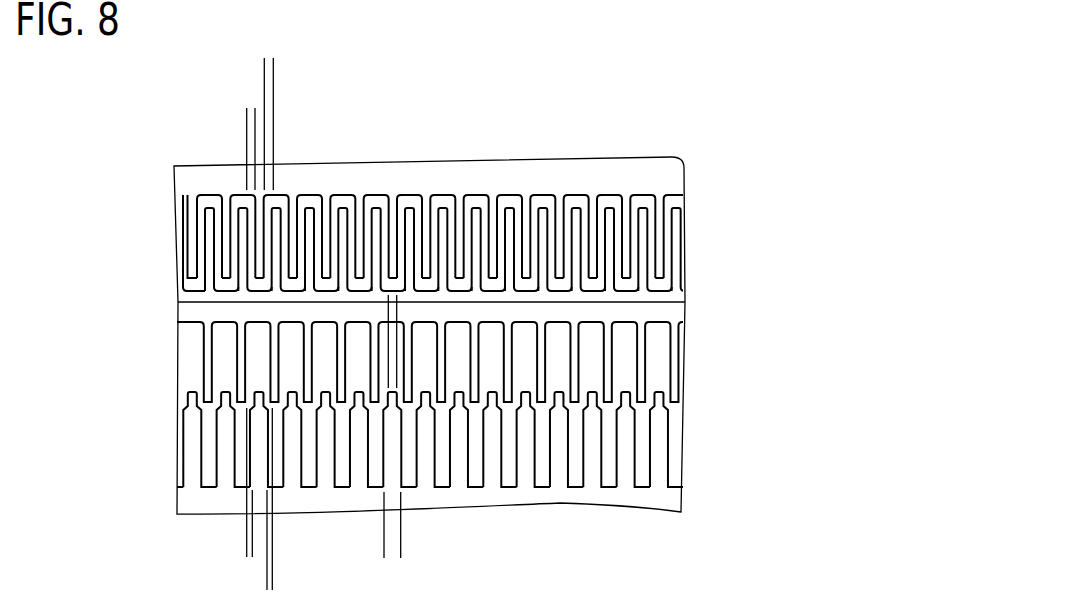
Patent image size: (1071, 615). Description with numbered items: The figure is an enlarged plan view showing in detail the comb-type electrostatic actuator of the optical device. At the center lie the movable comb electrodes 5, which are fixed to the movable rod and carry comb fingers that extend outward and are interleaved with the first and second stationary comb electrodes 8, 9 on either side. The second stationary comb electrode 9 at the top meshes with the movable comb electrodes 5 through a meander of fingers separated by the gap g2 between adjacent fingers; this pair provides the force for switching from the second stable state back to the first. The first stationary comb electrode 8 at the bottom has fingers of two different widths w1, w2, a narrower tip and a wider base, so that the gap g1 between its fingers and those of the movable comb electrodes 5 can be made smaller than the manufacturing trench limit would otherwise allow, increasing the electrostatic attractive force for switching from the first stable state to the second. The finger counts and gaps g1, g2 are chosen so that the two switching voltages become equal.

The second stationary comb electrode 9 is at (665, 232).
The movable comb electrode 5 is at (657, 305).
The first stationary comb electrode 8 is at (657, 435).
The gap between adjacent comb fingers of the first stationary comb electrodes and th g1 is at (265, 546).
The gap between adjacent comb fingers of the second stationary comb electrodes and t g2 is at (255, 117).
The first width of the first stationary comb electrode w1 is at (370, 305).
The second width of the first stationary comb electrode w2 is at (367, 544).